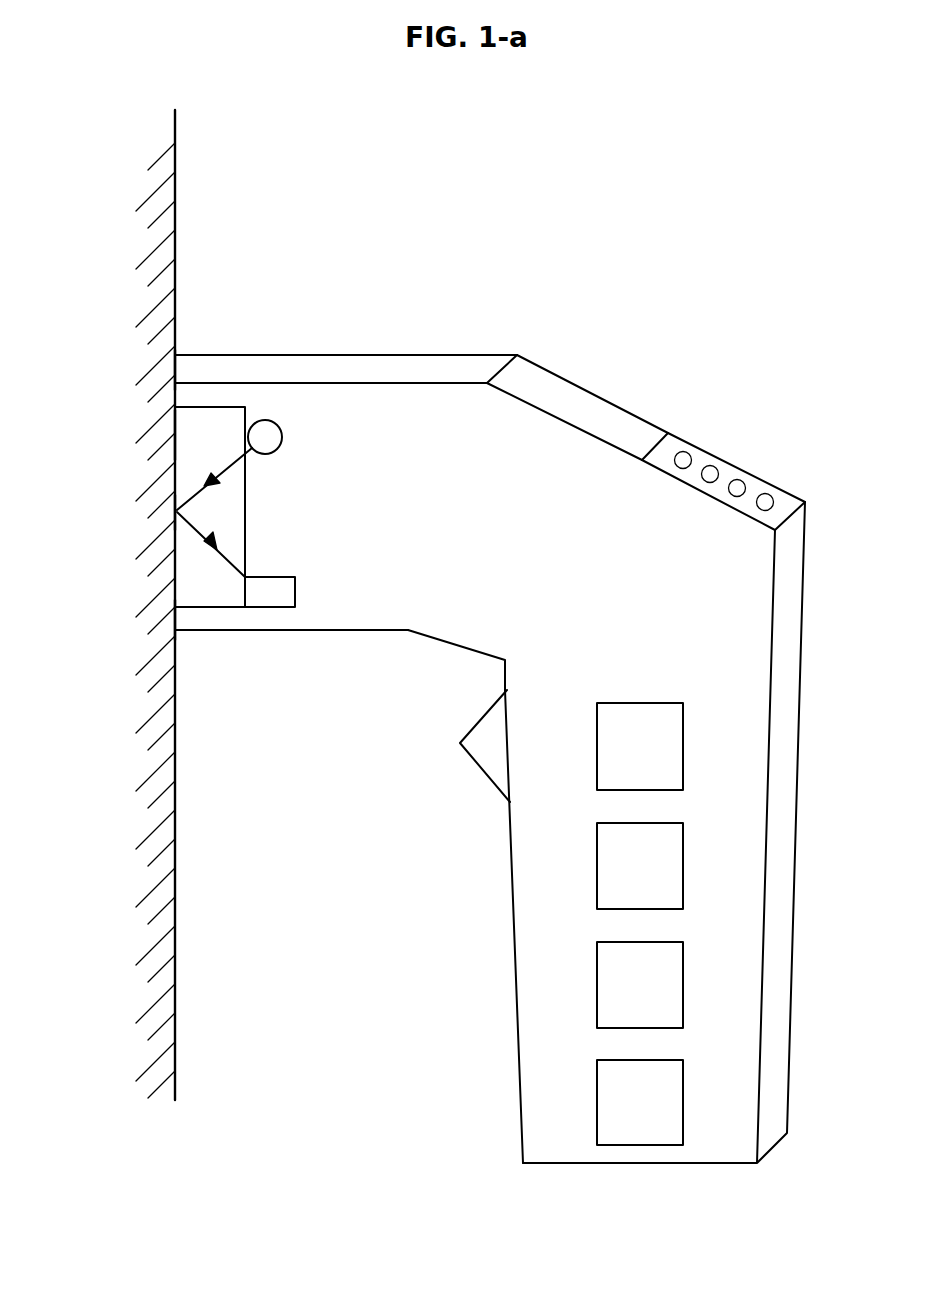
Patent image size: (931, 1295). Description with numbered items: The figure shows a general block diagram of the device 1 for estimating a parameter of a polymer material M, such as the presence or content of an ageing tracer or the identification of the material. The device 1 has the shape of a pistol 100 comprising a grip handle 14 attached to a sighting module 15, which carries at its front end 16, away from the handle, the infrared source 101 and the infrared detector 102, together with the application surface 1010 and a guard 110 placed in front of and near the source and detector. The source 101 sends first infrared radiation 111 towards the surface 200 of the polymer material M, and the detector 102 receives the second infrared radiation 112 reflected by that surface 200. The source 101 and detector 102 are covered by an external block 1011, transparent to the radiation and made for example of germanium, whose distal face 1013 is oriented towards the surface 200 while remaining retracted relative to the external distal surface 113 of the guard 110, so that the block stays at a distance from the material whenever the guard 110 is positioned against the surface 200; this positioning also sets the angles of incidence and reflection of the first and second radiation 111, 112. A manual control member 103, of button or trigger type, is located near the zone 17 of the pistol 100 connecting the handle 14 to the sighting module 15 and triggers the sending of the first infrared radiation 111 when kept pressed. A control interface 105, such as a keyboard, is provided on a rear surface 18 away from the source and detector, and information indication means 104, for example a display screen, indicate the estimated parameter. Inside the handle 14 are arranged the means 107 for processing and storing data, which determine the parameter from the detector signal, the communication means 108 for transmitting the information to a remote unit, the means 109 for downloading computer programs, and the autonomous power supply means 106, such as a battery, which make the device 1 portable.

The device 1 is at (435, 737).
The grip handle 14 is at (540, 995).
The sighting module 15 is at (427, 428).
The front end 16 is at (276, 400).
The zone connecting the handle to the sighting module 17 is at (515, 610).
The rear surface 18 is at (555, 380).
The pistol 100 is at (530, 865).
The infrared source 101 is at (283, 440).
The infrared detector 102 is at (283, 593).
The manual control member 103 is at (470, 750).
The information indication means 104 is at (620, 415).
The control interface 105 is at (733, 465).
The autonomous power supply means 106 is at (622, 1114).
The means for processing and storing data 107 is at (622, 759).
The communication means 108 is at (622, 878).
The means for downloading computer programs 109 is at (622, 997).
The guard 110 is at (212, 388).
The first infrared radiation 111 is at (227, 460).
The second infrared radiation 112 is at (228, 553).
The external distal surface of the guard 113 is at (175, 370).
The surface of the polymer material 200 is at (172, 708).
The surface 1010 is at (247, 517).
The external block 1011 is at (195, 435).
The distal face of the external block 1013 is at (168, 562).
The polymer material M is at (160, 838).